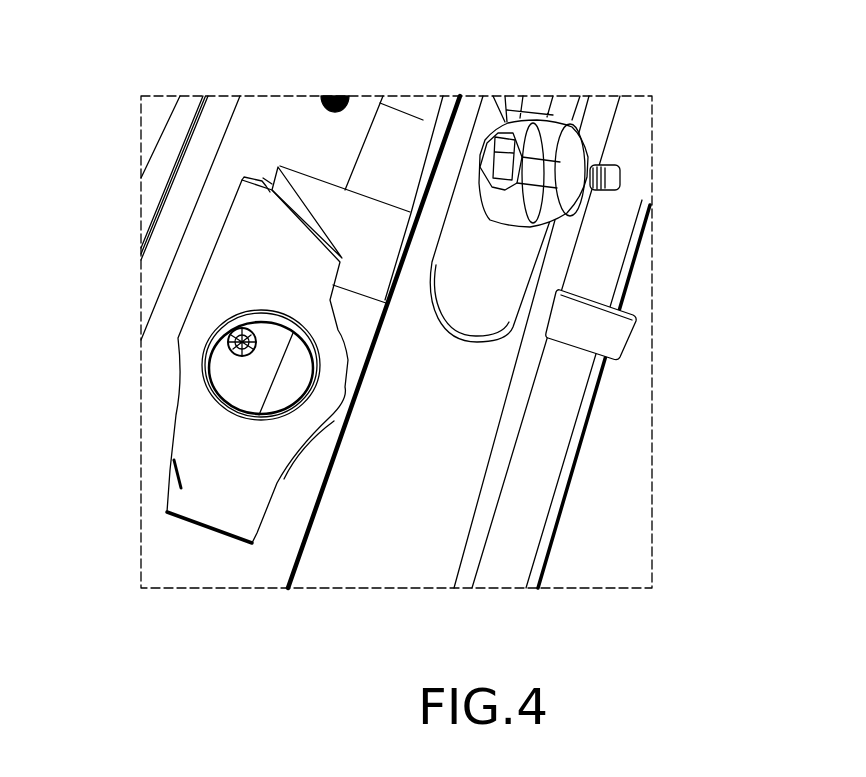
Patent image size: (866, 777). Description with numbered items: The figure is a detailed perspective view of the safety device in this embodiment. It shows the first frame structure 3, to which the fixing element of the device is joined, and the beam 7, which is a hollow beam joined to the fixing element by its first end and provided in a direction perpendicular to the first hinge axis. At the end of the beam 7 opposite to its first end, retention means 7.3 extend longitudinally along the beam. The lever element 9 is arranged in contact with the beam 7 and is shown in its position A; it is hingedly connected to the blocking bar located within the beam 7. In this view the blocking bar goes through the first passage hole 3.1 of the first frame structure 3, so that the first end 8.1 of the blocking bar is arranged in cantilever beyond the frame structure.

The first frame structure 3 is at (337, 563).
The first passage hole 3.1 is at (594, 262).
The beam 7 is at (379, 175).
The retention means 7.3 is at (287, 176).
The first end of the blocking bar 8.1 is at (659, 366).
The lever element 9 is at (183, 495).